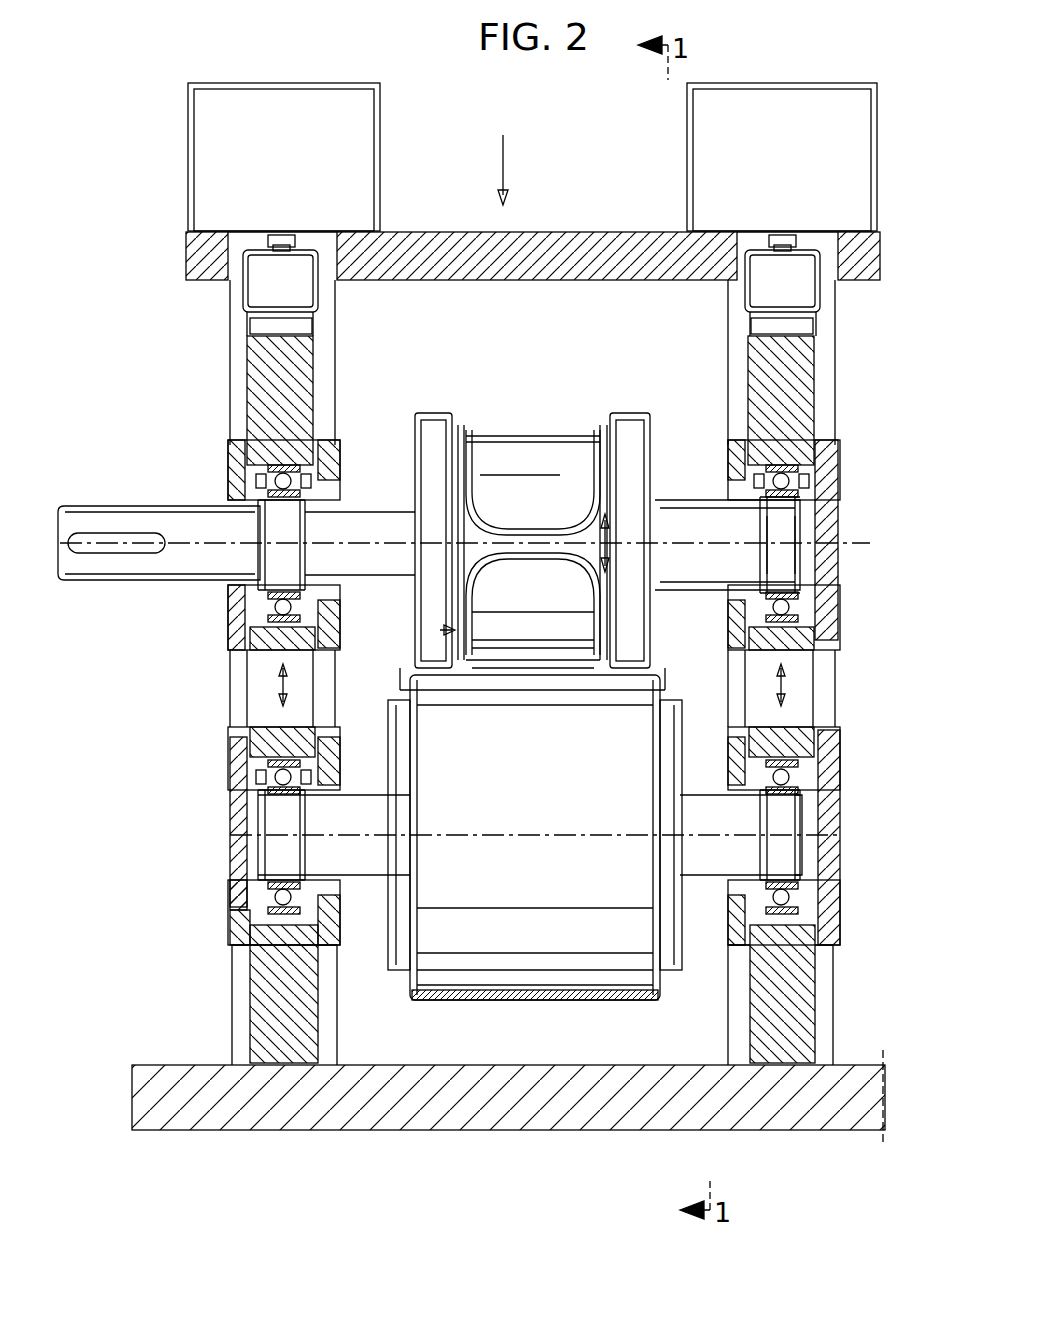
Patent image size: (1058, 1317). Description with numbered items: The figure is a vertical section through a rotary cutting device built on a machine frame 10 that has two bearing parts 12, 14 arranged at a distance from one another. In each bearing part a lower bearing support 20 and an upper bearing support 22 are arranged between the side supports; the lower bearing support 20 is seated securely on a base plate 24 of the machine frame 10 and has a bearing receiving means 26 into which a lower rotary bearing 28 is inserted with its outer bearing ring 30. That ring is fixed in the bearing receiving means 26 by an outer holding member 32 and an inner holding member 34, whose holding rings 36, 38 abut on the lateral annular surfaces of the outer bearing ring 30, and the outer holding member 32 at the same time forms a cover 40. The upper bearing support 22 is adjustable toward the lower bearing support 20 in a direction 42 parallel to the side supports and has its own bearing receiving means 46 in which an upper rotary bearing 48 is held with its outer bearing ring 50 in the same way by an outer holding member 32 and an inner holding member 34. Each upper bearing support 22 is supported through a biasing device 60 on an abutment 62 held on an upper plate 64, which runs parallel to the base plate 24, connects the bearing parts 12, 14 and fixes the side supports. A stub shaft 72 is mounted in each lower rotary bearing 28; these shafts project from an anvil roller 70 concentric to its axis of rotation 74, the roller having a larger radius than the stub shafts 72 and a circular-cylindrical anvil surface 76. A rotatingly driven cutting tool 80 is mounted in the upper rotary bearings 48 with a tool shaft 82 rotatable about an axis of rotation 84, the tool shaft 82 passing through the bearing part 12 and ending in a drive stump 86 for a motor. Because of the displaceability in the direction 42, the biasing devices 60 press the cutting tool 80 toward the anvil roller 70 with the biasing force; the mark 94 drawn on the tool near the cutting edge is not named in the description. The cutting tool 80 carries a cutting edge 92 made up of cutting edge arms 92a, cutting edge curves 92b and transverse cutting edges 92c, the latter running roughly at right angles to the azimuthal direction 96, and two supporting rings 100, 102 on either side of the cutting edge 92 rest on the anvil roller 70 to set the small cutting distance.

The machine frame 10 is at (503, 151).
The bearing part 12 is at (229, 348).
The bearing part 14 is at (834, 348).
The lower bearing support 20 is at (248, 996).
The upper bearing support 22 is at (245, 385).
The base plate 24 is at (468, 1132).
The bearing receiving means 26 is at (242, 772).
The lower rotary bearing 28 is at (840, 776).
The outer bearing ring 30 is at (330, 790).
The outer holding member 32 is at (232, 634).
The inner holding member 34 is at (320, 640).
The holding ring 36 is at (228, 938).
The holding ring 38 is at (330, 932).
The cover 40 is at (242, 862).
The direction 42 is at (280, 687).
The bearing receiving means 46 is at (240, 492).
The upper rotary bearing 48 is at (840, 490).
The outer bearing ring 50 is at (338, 465).
The biasing device 60 is at (245, 298).
The abutment 62 is at (196, 166).
The upper plate 64 is at (604, 232).
The anvil roller 70 is at (537, 1003).
The stub shaft 72 is at (266, 824).
The axis of rotation 74 is at (838, 840).
The anvil surface 76 is at (600, 1002).
The rotating cutting tool 80 is at (523, 414).
The tool shaft 82 is at (802, 586).
The axis of rotation 84 is at (846, 543).
The drive stump 86 is at (122, 580).
The cutting edge 92 is at (440, 630).
The cutting edge arm 92a is at (486, 688).
The cutting edge curve 92b is at (590, 612).
The transverse cutting edge 92c is at (542, 561).
The strip center 94 is at (537, 715).
The azimuthal direction 96 is at (612, 543).
The supporting ring 100 is at (440, 412).
The supporting ring 102 is at (625, 412).